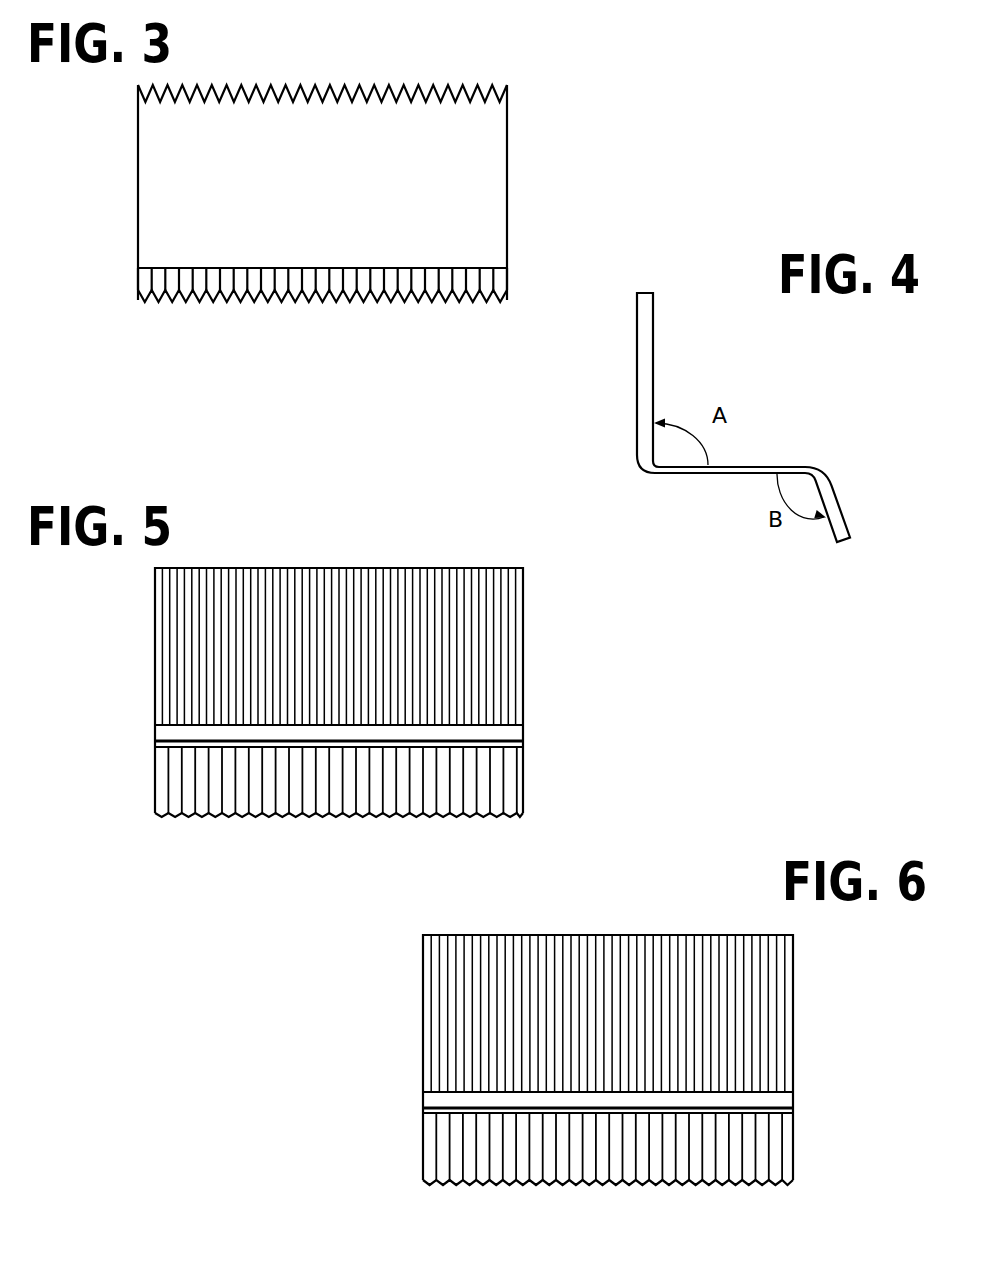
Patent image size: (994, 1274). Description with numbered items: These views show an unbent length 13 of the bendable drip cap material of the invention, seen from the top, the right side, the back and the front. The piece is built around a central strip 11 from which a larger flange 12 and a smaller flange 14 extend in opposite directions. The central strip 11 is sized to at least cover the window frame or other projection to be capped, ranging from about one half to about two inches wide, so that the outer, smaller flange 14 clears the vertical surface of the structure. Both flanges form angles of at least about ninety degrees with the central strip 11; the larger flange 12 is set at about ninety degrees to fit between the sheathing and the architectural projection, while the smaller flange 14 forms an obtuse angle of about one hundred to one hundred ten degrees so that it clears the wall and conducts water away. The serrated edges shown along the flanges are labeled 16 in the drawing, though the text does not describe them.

In FIG. 3, the central strip 11 is at (509, 190).
In FIG. 4, the central strip 11 is at (690, 475).
In FIG. 5, the central strip 11 is at (523, 733).
In FIG. 6, the central strip 11 is at (793, 1097).
In FIG. 3, the larger flange 12 is at (424, 85).
In FIG. 4, the larger flange 12 is at (637, 357).
In FIG. 5, the larger flange 12 is at (523, 629).
In FIG. 6, the larger flange 12 is at (793, 978).
In FIG. 3, the unbent length 13 is at (378, 185).
In FIG. 4, the unbent length 13 is at (729, 425).
In FIG. 5, the unbent length 13 is at (343, 686).
In FIG. 6, the unbent length 13 is at (613, 1055).
In FIG. 3, the smaller flange 14 is at (417, 298).
In FIG. 4, the smaller flange 14 is at (846, 522).
In FIG. 5, the smaller flange 14 is at (523, 773).
In FIG. 6, the smaller flange 14 is at (793, 1149).
In FIG. 3, the serrated teeth 16 is at (228, 85).
In FIG. 5, the serrated teeth 16 is at (445, 568).
In FIG. 6, the serrated teeth 16 is at (690, 935).